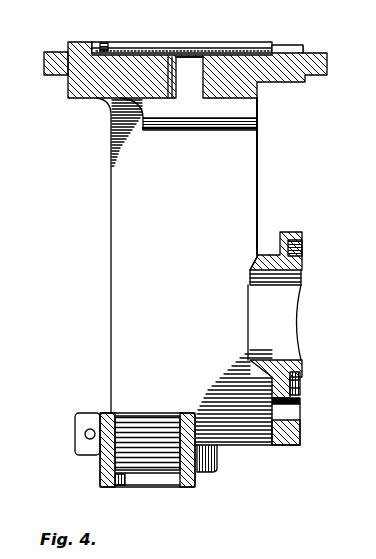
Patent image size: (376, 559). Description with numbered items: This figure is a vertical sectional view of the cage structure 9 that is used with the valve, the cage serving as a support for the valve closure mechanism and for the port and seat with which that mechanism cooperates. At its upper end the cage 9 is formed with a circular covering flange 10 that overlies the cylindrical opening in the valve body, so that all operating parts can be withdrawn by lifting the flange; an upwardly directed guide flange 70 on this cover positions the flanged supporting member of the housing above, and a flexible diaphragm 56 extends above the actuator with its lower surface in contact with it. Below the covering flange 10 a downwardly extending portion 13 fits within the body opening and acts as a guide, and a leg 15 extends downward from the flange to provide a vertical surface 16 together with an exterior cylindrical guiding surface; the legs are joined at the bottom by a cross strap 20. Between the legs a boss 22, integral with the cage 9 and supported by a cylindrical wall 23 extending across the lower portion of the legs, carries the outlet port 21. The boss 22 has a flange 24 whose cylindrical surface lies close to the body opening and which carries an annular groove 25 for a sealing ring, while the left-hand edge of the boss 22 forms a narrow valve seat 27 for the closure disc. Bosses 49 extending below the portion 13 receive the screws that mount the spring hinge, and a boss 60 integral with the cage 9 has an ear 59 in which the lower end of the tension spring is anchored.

The cage structure 9 is at (259, 150).
The circular covering flange 10 is at (315, 63).
The downwardly extending portion 13 is at (82, 100).
The leg 15 is at (237, 172).
The vertical surface 16 is at (198, 271).
The cross strap 20 is at (204, 470).
The outlet port 21 is at (290, 362).
The boss 22 is at (262, 257).
The cylindrical wall 23 is at (290, 436).
The flange 24 is at (297, 236).
The annular groove 25 is at (300, 381).
The valve seat 27 is at (249, 267).
The boss 49 is at (197, 120).
The flexible diaphragm 56 is at (179, 48).
The ear 59 is at (80, 424).
The boss 60 is at (100, 468).
The guide flange 70 is at (312, 42).